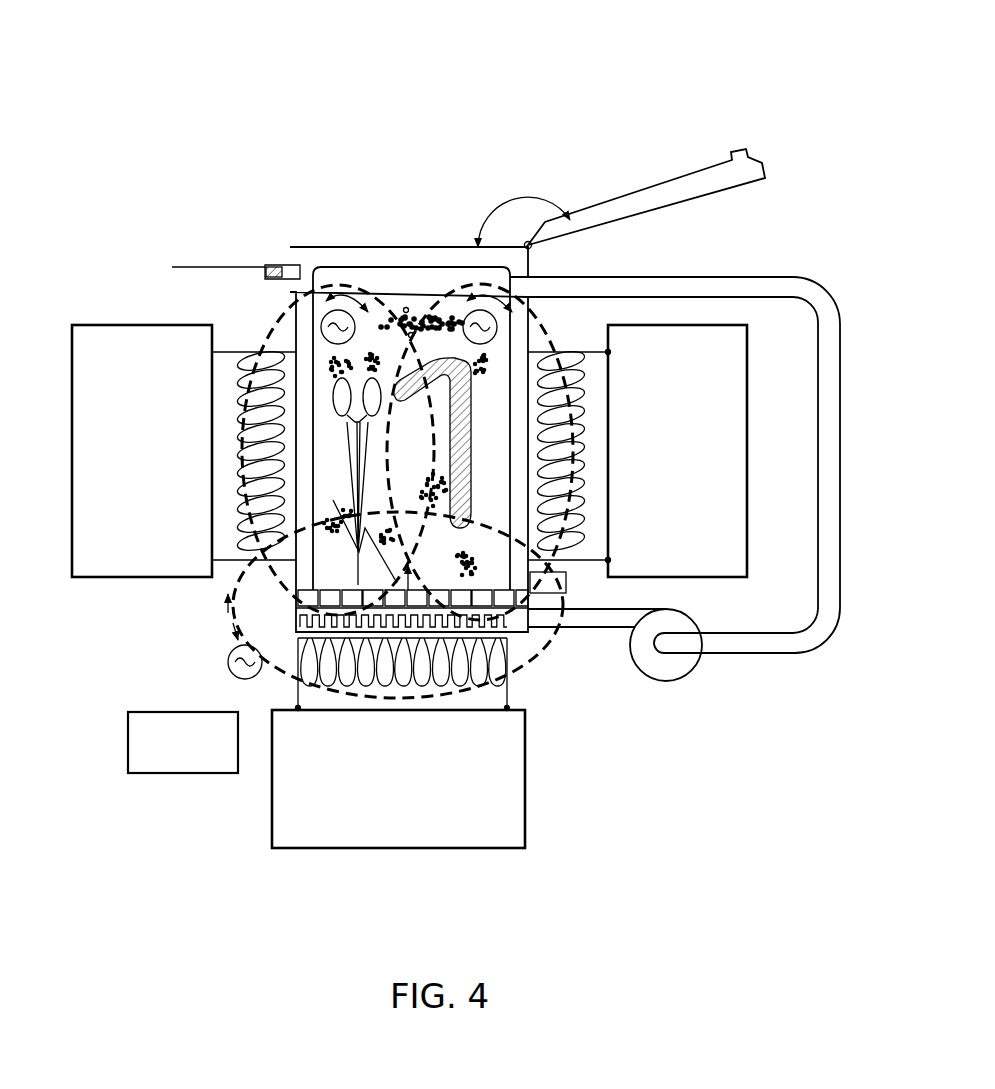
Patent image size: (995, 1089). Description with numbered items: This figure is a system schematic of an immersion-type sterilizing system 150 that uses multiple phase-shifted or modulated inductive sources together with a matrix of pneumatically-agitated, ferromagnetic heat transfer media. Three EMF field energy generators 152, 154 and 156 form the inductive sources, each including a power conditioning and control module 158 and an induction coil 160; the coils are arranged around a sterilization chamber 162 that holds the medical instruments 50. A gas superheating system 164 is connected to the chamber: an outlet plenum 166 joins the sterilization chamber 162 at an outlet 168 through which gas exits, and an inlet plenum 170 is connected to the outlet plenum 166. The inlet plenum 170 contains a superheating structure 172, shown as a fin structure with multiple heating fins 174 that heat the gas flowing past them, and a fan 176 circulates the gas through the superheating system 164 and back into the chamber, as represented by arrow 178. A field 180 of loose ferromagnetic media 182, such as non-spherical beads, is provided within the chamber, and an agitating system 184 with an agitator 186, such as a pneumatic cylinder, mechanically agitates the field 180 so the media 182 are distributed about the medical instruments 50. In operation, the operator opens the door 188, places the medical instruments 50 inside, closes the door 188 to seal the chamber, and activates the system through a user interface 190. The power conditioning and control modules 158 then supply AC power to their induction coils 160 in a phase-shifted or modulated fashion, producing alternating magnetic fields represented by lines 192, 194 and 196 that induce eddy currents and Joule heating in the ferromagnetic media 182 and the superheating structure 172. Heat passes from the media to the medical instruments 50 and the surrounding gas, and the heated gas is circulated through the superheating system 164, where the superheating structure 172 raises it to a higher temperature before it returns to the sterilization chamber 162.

The medical instruments 50 is at (370, 437).
The sterilizing system 150 is at (530, 95).
The EMF field energy generator 152 is at (108, 596).
The EMF field energy generator 154 is at (547, 800).
The EMF field energy generator 156 is at (783, 340).
The power conditioning and control module 158 is at (72, 490).
The induction coil 160 is at (238, 350).
The sterilization chamber 162 is at (402, 285).
The gas superheating system 164 is at (705, 690).
The outlet plenum 166 is at (743, 278).
The outlet 168 is at (543, 287).
The inlet plenum 170 is at (598, 628).
The superheating structure 172 is at (283, 615).
The heating fins 174 is at (330, 620).
The fan 176 is at (353, 531).
The arrow 178 is at (410, 565).
The field of loose ferromagnetic media 180 is at (424, 302).
The ferromagnetic media 182 is at (406, 322).
The agitating system 184 is at (577, 583).
The agitator 186 is at (545, 594).
The door 188 is at (676, 182).
The user interface 190 is at (180, 774).
The alternating magnetic field lines 192 is at (280, 322).
The alternating magnetic field lines 194 is at (360, 693).
The alternating magnetic field lines 196 is at (586, 490).